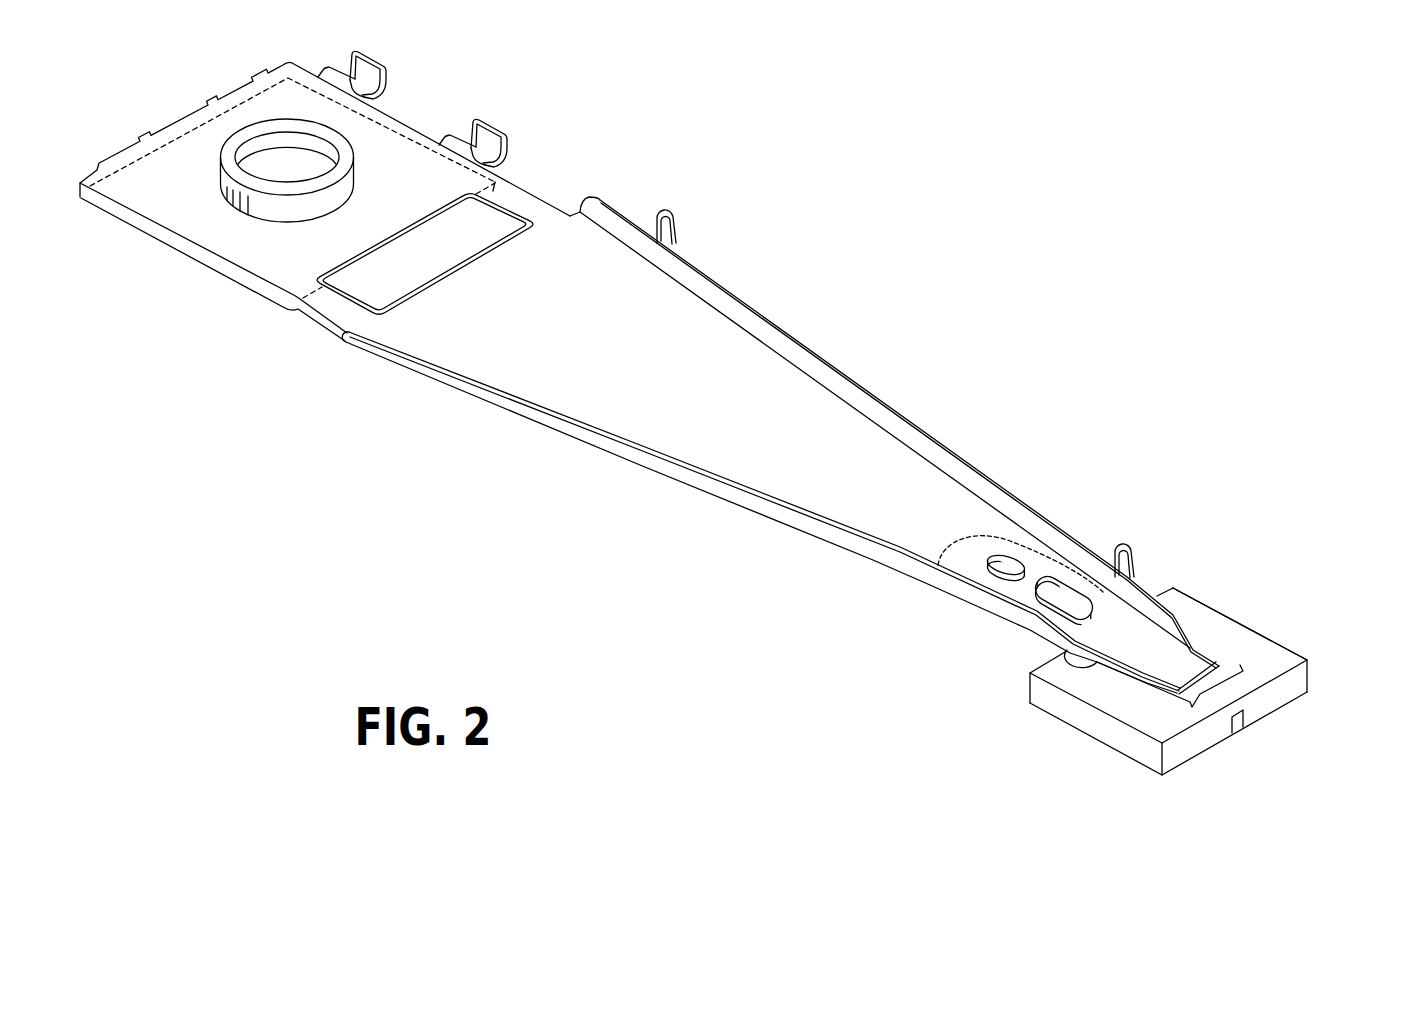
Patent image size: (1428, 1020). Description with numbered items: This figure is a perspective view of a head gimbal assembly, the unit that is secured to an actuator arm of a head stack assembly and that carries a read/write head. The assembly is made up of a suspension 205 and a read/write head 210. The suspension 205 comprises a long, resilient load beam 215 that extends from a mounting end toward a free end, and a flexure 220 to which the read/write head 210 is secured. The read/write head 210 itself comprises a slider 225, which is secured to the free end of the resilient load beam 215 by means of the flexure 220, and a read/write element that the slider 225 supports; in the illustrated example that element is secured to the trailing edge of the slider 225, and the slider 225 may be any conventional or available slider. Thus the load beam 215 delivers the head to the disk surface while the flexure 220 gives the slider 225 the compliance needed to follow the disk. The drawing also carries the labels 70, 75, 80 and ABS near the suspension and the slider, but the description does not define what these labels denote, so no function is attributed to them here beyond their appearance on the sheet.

The head suspension assembly 70 is at (822, 187).
The load beam 75 is at (1009, 465).
The slider 80 is at (1200, 576).
The suspension 205 is at (797, 410).
The read/write head 210 is at (1065, 649).
The resilient load beam 215 is at (1237, 618).
The flexure 220 is at (1240, 733).
The slider 225 is at (1307, 693).
The air bearing surface ABS is at (1192, 765).